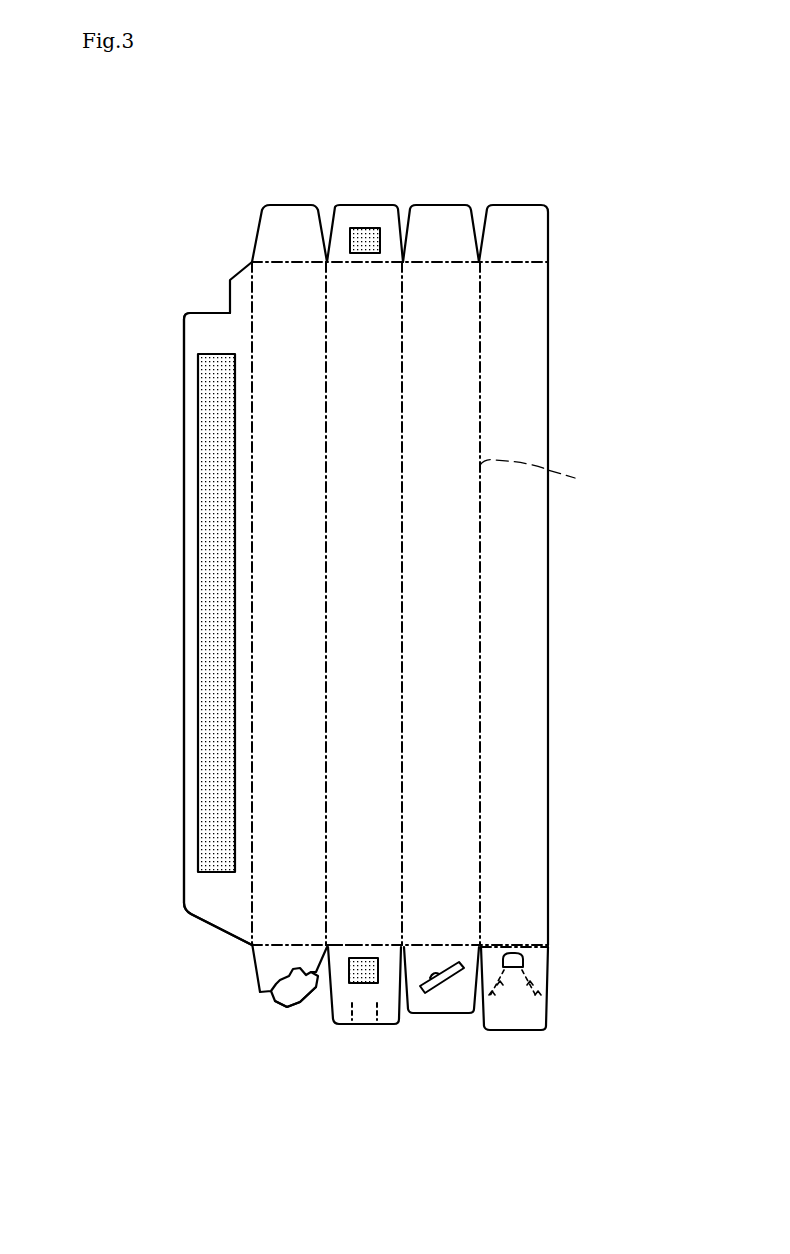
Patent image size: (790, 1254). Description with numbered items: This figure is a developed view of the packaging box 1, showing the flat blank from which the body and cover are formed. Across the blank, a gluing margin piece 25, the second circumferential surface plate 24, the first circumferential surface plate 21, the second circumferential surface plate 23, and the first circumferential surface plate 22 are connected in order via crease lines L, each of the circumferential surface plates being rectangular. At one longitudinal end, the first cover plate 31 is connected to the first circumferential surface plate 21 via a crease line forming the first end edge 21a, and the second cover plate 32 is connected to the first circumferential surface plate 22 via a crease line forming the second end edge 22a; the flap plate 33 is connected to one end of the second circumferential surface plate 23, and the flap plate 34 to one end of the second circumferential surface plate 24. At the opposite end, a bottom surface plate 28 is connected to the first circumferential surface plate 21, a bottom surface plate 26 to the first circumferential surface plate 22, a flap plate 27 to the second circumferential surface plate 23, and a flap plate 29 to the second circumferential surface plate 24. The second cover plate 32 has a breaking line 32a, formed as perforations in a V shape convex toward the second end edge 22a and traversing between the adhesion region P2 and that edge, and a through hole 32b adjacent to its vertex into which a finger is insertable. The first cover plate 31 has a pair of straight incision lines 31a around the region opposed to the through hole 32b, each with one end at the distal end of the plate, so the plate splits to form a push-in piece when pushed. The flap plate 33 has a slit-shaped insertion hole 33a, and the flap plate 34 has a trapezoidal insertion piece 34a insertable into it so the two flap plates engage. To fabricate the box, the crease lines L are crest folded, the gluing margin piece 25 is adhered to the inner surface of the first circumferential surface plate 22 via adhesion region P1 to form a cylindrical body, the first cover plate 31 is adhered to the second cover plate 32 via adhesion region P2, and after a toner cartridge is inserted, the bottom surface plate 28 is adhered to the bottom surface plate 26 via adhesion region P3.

The packaging box 1 is at (630, 188).
The first circumferential surface plate 21 is at (380, 677).
The first end edge 21a is at (350, 940).
The first circumferential surface plate 22 is at (529, 677).
The second end edge 22a is at (528, 947).
The second circumferential surface plate 23 is at (454, 677).
The second circumferential surface plate 24 is at (304, 677).
The gluing margin piece 25 is at (222, 335).
The bottom surface plate 26 is at (520, 218).
The flap plate 27 is at (435, 218).
The bottom surface plate 28 is at (370, 218).
The flap plate 29 is at (283, 218).
The first cover plate 31 is at (397, 1023).
The incision lines 31a is at (377, 1015).
The second cover plate 32 is at (535, 1022).
The breaking line 32a is at (545, 982).
The through hole 32b is at (515, 965).
The flap plate 33 is at (450, 1002).
The insertion hole 33a is at (430, 972).
The flap plate 34 is at (265, 968).
The insertion piece 34a is at (302, 995).
The crease lines L is at (543, 463).
The adhesion region P1 is at (220, 578).
The adhesion region P2 is at (372, 972).
The adhesion region P3 is at (352, 230).